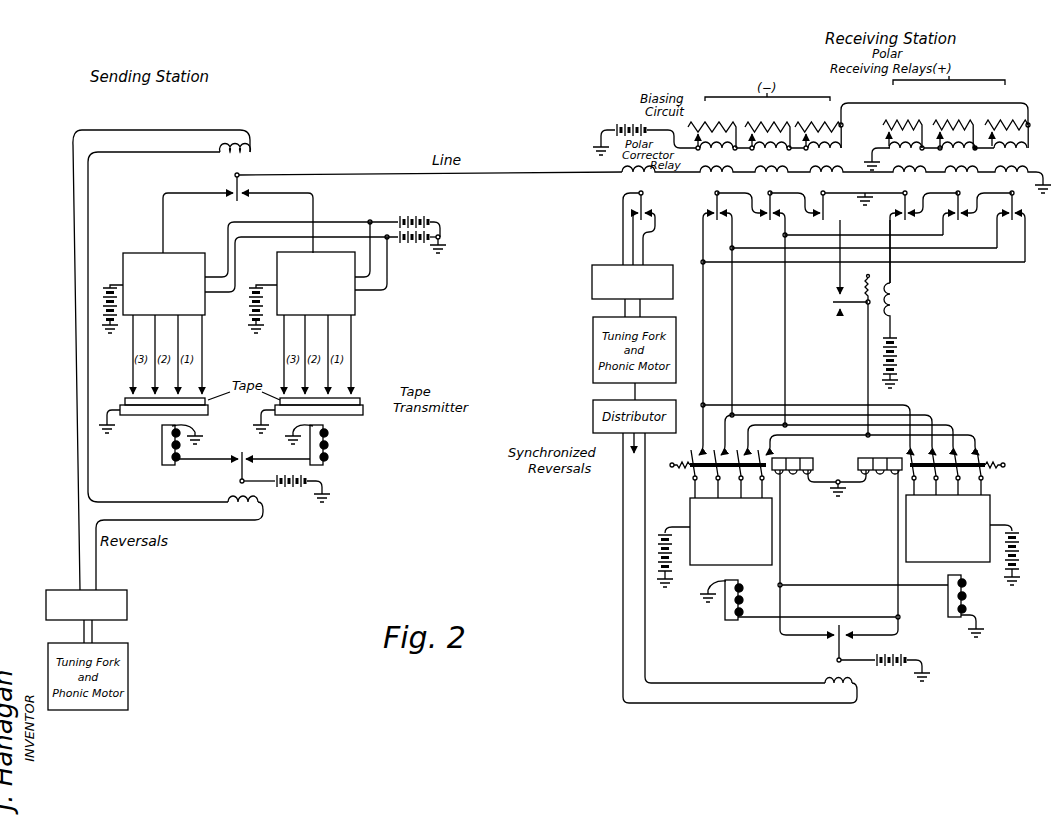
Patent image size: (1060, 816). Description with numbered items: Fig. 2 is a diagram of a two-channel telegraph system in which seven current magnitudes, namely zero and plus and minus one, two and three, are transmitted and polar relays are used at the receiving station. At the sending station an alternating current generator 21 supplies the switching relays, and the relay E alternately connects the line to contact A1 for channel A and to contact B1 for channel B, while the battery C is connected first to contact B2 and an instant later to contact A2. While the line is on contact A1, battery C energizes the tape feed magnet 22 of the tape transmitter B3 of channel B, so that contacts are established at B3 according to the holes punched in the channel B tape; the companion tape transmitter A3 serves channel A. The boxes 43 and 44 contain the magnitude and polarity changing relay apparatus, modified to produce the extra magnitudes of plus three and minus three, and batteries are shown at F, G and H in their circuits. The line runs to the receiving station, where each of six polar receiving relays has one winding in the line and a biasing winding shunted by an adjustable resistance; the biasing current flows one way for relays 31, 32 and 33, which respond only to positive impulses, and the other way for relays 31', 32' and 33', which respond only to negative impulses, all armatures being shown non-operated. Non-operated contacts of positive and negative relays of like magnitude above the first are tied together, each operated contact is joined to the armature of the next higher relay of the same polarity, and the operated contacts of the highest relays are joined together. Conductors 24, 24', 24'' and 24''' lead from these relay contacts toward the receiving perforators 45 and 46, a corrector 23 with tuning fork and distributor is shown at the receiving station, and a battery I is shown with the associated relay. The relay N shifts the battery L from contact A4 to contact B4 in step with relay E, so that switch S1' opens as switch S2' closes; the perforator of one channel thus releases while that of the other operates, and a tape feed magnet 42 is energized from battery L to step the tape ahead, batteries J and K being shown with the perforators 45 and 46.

The alternating current generator 21 is at (86, 595).
The tape feed magnet 22 is at (244, 445).
The corrector 23 is at (614, 282).
The contact wire 24 is at (851, 327).
The contact wire 24' is at (798, 330).
The contact wire 24'' is at (745, 331).
The contact wire 24''' is at (697, 309).
The polar receiving relay 31 is at (894, 129).
The polar receiving relay 32 is at (950, 119).
The polar receiving relay 33 is at (1001, 118).
The polar receiving relay 31' is at (816, 125).
The polar receiving relay 32' is at (764, 125).
The polar receiving relay 33' is at (712, 125).
The tape feed magnet 42 is at (842, 602).
The magnitude and polarity changing relay apparatus 43 is at (164, 284).
The magnitude and polarity changing relay apparatus 44 is at (316, 283).
The receiving perforator 45 is at (731, 531).
The receiving perforator 46 is at (948, 528).
The contact A1 is at (198, 223).
The contact B1 is at (277, 223).
The contact A2 is at (206, 447).
The contact B2 is at (278, 446).
The tape transmitter A3 is at (164, 415).
The tape transmitter B3 is at (318, 415).
The contact A4 is at (805, 627).
The contact B4 is at (858, 625).
The battery C is at (303, 493).
The relay E is at (222, 186).
The batteries F is at (423, 221).
The battery G is at (97, 309).
The battery H is at (251, 309).
The battery I is at (895, 363).
The battery J is at (655, 550).
The battery K is at (1014, 555).
The battery L is at (885, 675).
The relay N is at (740, 568).
The switch S1' is at (792, 455).
The switch S2' is at (880, 455).